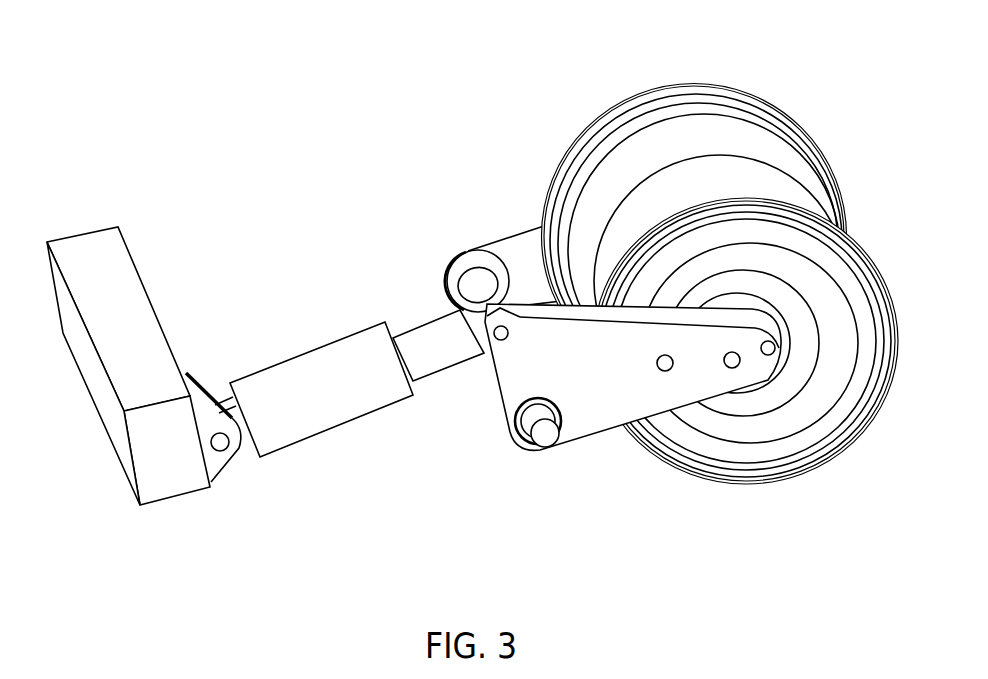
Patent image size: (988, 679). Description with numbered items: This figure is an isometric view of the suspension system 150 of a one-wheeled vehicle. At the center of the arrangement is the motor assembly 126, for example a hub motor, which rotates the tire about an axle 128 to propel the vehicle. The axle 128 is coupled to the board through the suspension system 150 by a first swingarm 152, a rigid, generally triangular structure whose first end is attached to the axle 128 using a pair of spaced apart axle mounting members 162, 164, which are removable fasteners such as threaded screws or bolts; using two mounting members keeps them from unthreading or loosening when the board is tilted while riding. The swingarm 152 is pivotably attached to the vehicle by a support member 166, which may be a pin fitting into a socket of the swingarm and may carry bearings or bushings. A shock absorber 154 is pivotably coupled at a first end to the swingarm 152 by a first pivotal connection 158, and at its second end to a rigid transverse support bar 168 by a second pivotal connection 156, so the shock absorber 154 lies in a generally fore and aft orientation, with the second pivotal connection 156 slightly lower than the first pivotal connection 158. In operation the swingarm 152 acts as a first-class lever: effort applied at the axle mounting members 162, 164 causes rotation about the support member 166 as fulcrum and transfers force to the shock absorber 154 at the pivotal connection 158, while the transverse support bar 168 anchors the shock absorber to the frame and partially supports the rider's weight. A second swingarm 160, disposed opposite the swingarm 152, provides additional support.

The motor assembly 126 is at (678, 66).
The axle 128 is at (780, 318).
The suspension system 150 is at (340, 56).
The first swingarm 152 is at (610, 410).
The shock absorber 154 is at (348, 455).
The second pivotal connection 156 is at (223, 446).
The first pivotal connection 158 is at (507, 337).
The second swingarm 160 is at (515, 250).
The axle mounting member 162 is at (734, 368).
The axle mounting member 164 is at (771, 356).
The support member 166 is at (545, 433).
The transverse support bar 168 is at (87, 247).